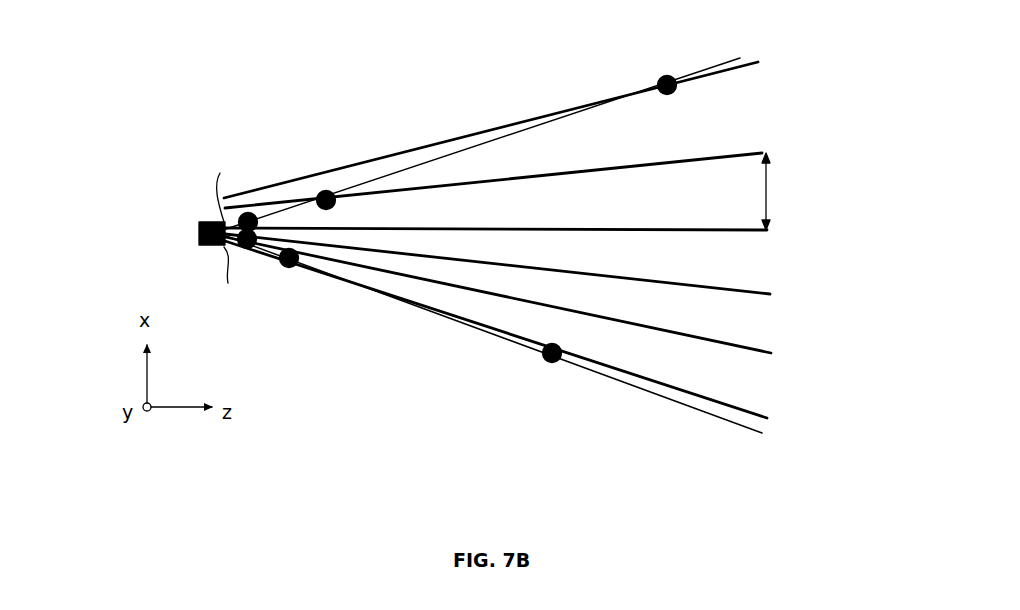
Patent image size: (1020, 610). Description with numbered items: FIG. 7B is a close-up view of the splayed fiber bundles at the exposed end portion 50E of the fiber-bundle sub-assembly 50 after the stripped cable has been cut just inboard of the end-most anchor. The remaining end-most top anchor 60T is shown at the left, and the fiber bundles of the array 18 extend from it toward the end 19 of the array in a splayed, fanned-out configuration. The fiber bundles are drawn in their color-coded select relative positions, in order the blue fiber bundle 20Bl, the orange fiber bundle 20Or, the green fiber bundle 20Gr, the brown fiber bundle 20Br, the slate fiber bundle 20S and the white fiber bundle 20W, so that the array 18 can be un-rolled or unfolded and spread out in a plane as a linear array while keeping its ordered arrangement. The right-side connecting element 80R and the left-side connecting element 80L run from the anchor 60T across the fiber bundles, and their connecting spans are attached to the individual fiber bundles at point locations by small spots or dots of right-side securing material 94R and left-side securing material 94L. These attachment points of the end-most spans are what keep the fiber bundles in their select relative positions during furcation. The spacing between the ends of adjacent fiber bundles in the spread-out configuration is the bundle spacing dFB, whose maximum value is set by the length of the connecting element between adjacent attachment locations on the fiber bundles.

The top anchor 60T is at (206, 220).
The blue fiber bundle 20Bl is at (757, 61).
The orange fiber bundle 20Or is at (735, 152).
The green fiber bundle 20Gr is at (750, 232).
The brown fiber bundle 20Br is at (750, 295).
The slate fiber bundle 20S is at (755, 353).
The white fiber bundle 20W is at (765, 418).
The right-side connecting element 80R is at (435, 162).
The left-side connecting element 80L is at (352, 283).
The right-side securing material 94R is at (326, 190).
The left-side securing material 94L is at (249, 249).
The bundle spacing dFB is at (788, 191).
The exposed end portion 50E is at (436, 346).
The fiber-bundle sub-assembly 50 is at (404, 438).
The array 18 is at (628, 413).
The end of array 19 is at (864, 109).